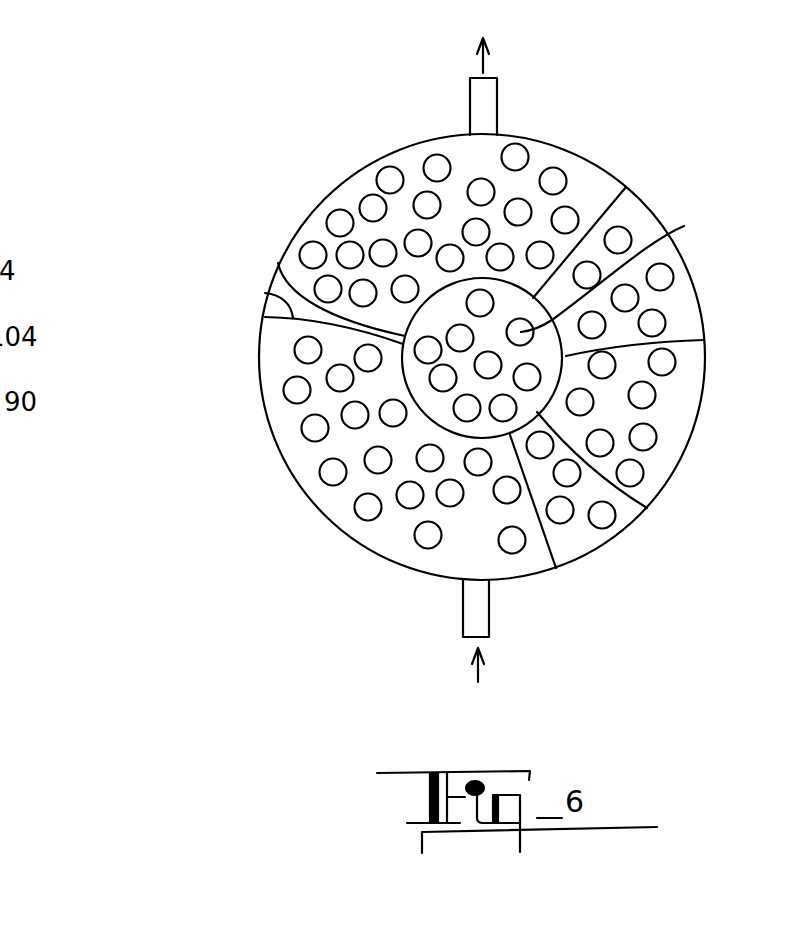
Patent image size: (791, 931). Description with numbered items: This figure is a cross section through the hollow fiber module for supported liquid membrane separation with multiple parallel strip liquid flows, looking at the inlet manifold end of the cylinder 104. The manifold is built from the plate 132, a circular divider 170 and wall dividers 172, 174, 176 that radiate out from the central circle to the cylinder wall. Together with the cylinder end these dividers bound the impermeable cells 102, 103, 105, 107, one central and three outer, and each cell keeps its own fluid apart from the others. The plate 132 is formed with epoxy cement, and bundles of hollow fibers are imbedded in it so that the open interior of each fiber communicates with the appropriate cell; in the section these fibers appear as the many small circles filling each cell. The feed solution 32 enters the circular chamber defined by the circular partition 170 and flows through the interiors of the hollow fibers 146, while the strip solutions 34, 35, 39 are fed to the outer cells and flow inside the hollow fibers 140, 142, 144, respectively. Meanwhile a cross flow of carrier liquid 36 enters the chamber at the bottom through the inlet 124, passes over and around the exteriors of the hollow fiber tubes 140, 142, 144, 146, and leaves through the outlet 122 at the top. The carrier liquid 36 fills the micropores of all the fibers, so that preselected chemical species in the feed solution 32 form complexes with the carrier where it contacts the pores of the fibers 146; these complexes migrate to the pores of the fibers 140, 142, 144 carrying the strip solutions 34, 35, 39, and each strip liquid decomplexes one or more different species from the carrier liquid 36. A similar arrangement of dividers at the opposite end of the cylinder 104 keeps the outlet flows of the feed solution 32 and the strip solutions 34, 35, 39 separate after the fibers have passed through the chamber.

The carrier liquid 36 is at (481, 63).
The outlet 122 is at (470, 107).
The inlet 124 is at (489, 598).
The cylinder 104 is at (528, 134).
The impermeable cell 102 is at (412, 163).
The strip solution 34 is at (373, 208).
The hollow fibers 144 is at (328, 213).
The impermeable cell 107 is at (278, 263).
The wall divider 174 is at (265, 293).
The strip solution 39 is at (308, 350).
The impermeable cell 105 is at (273, 375).
The plate 132 is at (292, 420).
The hollow fibers 140 is at (368, 507).
The wall divider 172 is at (605, 208).
The feed solution 32 is at (620, 272).
The circular divider 170 is at (700, 338).
The impermeable cell 103 is at (688, 370).
The hollow fibers 142 is at (655, 395).
The strip solution 35 is at (643, 437).
The hollow fibers 146 is at (647, 508).
The wall divider 176 is at (553, 537).